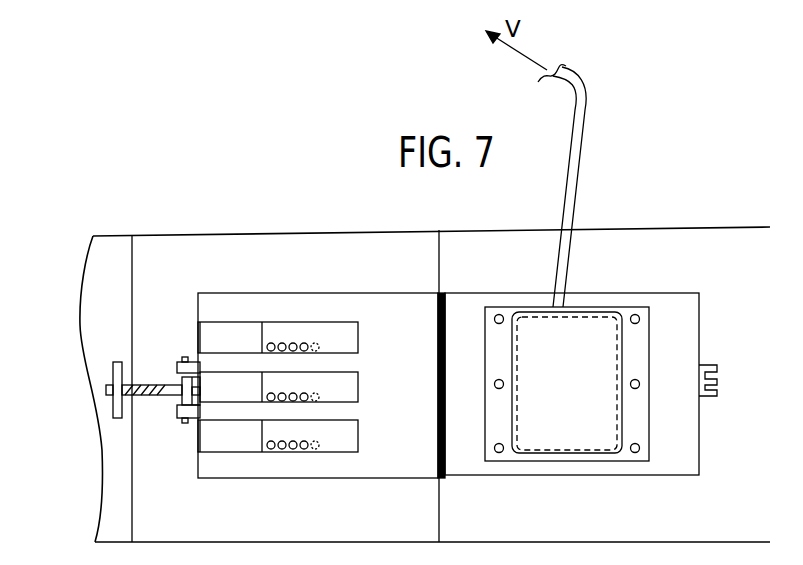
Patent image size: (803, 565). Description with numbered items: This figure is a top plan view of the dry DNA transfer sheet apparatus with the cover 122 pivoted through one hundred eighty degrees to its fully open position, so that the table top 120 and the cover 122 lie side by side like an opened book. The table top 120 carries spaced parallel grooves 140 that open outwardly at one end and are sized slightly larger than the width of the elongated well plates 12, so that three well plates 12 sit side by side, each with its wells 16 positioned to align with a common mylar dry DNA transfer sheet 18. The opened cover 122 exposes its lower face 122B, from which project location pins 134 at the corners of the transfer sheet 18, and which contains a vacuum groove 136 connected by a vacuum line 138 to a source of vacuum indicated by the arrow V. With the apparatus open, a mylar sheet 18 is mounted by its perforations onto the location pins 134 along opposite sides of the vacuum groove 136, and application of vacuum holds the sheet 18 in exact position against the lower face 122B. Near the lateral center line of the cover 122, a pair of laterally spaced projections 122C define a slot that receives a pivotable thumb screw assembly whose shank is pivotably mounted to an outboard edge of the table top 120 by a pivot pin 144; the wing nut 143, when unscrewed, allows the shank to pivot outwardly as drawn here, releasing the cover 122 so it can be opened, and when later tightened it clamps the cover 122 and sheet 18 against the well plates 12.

The well plates 12 is at (348, 392).
The wells 16 is at (285, 447).
The mylar dry DNA transfer sheet 18 is at (638, 455).
The table top 120 is at (360, 481).
The cover 122 is at (665, 477).
The lower face of cover 122B is at (673, 300).
The laterally spaced projections 122C is at (178, 370).
The location pins 134 is at (496, 314).
The vacuum groove 136 is at (553, 452).
The vacuum line 138 is at (585, 108).
The grooves 140 is at (247, 387).
The wing nut 143 is at (112, 378).
The pivot pin 144 is at (186, 422).